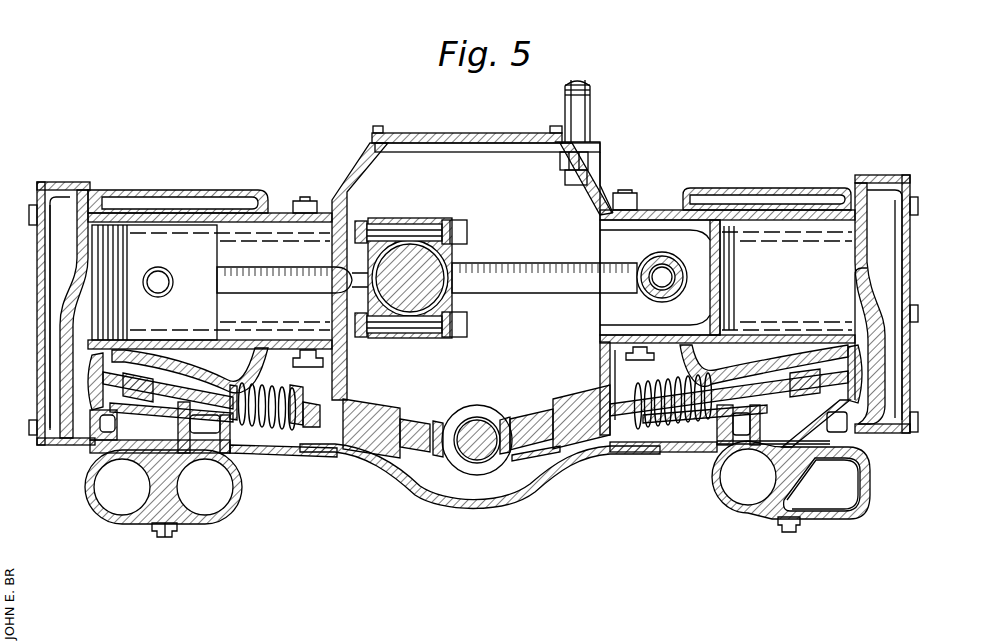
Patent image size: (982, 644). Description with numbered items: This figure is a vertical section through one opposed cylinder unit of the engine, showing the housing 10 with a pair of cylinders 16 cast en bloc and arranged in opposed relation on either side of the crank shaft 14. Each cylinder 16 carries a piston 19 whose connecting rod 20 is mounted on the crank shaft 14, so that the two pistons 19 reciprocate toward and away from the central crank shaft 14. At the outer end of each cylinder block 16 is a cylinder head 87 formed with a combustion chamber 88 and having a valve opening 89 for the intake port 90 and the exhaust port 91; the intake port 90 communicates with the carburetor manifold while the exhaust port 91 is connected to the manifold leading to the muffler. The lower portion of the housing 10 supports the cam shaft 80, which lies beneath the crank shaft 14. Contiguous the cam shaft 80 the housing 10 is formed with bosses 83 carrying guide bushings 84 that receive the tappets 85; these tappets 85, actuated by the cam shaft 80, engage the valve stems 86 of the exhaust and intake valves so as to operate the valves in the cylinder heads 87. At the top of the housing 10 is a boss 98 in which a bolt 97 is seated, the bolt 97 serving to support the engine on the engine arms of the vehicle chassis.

The housing 10 is at (500, 508).
The crank shaft 14 is at (412, 238).
The cylinder 16 is at (236, 191).
The piston 19 is at (413, 280).
The connecting rod 20 is at (330, 285).
The cam shaft 80 is at (461, 460).
The boss 83 is at (373, 452).
The guide bushing 84 is at (546, 445).
The tappet 85 is at (323, 436).
The valve stem 86 is at (275, 432).
The cylinder head 87 is at (37, 256).
The combustion chamber 88 is at (869, 362).
The valve opening 89 is at (866, 383).
The intake port 90 is at (835, 486).
The exhaust port 91 is at (214, 492).
The bolt 97 is at (590, 112).
The boss 98 is at (563, 164).